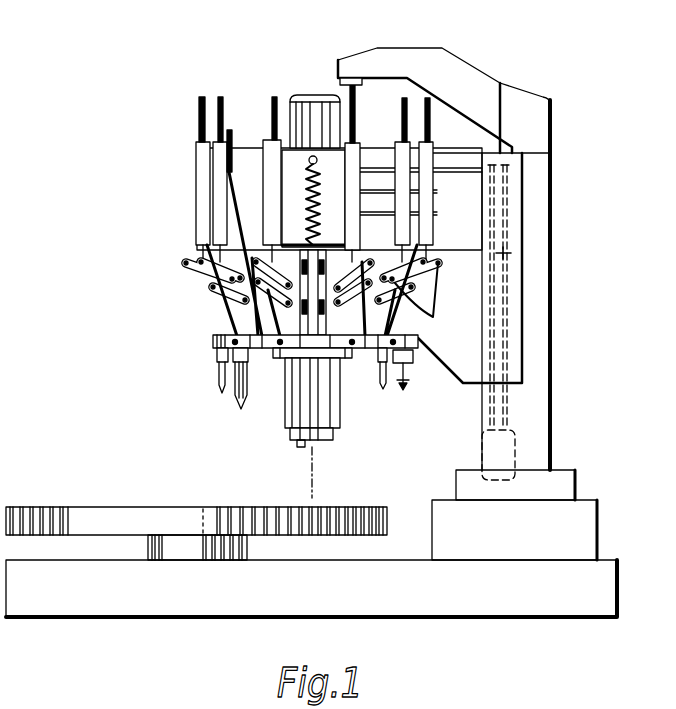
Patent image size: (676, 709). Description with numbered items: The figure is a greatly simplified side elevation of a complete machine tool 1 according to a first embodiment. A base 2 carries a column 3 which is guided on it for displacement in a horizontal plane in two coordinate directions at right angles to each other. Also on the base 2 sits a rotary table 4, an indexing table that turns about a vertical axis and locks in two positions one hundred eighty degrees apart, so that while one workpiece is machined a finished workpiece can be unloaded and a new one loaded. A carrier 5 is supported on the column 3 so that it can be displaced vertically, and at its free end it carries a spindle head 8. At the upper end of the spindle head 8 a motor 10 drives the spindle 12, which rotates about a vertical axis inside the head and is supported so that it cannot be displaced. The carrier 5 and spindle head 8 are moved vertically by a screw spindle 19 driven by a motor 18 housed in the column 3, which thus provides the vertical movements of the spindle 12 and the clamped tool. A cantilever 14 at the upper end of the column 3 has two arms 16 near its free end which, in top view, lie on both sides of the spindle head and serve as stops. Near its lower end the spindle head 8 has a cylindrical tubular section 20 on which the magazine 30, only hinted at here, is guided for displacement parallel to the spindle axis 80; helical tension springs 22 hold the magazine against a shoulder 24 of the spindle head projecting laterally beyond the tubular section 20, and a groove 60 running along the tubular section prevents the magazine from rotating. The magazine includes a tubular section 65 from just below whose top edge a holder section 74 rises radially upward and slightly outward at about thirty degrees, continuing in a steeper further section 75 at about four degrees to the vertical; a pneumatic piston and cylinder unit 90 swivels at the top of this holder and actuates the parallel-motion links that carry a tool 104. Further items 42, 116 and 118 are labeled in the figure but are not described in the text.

The machine tool 1 is at (178, 122).
The base 2 is at (145, 600).
The column 3 is at (533, 302).
The rotary table 4 is at (142, 518).
The carrier 5 is at (472, 200).
The spindle head 8 is at (265, 185).
The motor 10 is at (303, 118).
The spindle 12 is at (323, 440).
The cantilever 14 is at (517, 118).
The arms 16 is at (412, 57).
The motor 18 is at (507, 453).
The screw spindle 19 is at (507, 253).
The tubular section 20 is at (293, 407).
The helical tension springs 22 is at (365, 180).
The shoulder 24 is at (207, 242).
The magazine 30 is at (283, 254).
The tool tip 42 is at (300, 458).
The groove 60 is at (343, 397).
The tubular section 65 is at (300, 327).
The section 74 is at (210, 297).
The further section 75 is at (240, 185).
The spindle axis 80 is at (320, 490).
The pneumatic piston and cylinder unit 90 is at (218, 180).
The tool 104 is at (225, 400).
The lead line 116 is at (345, 80).
The rod 118 is at (364, 84).